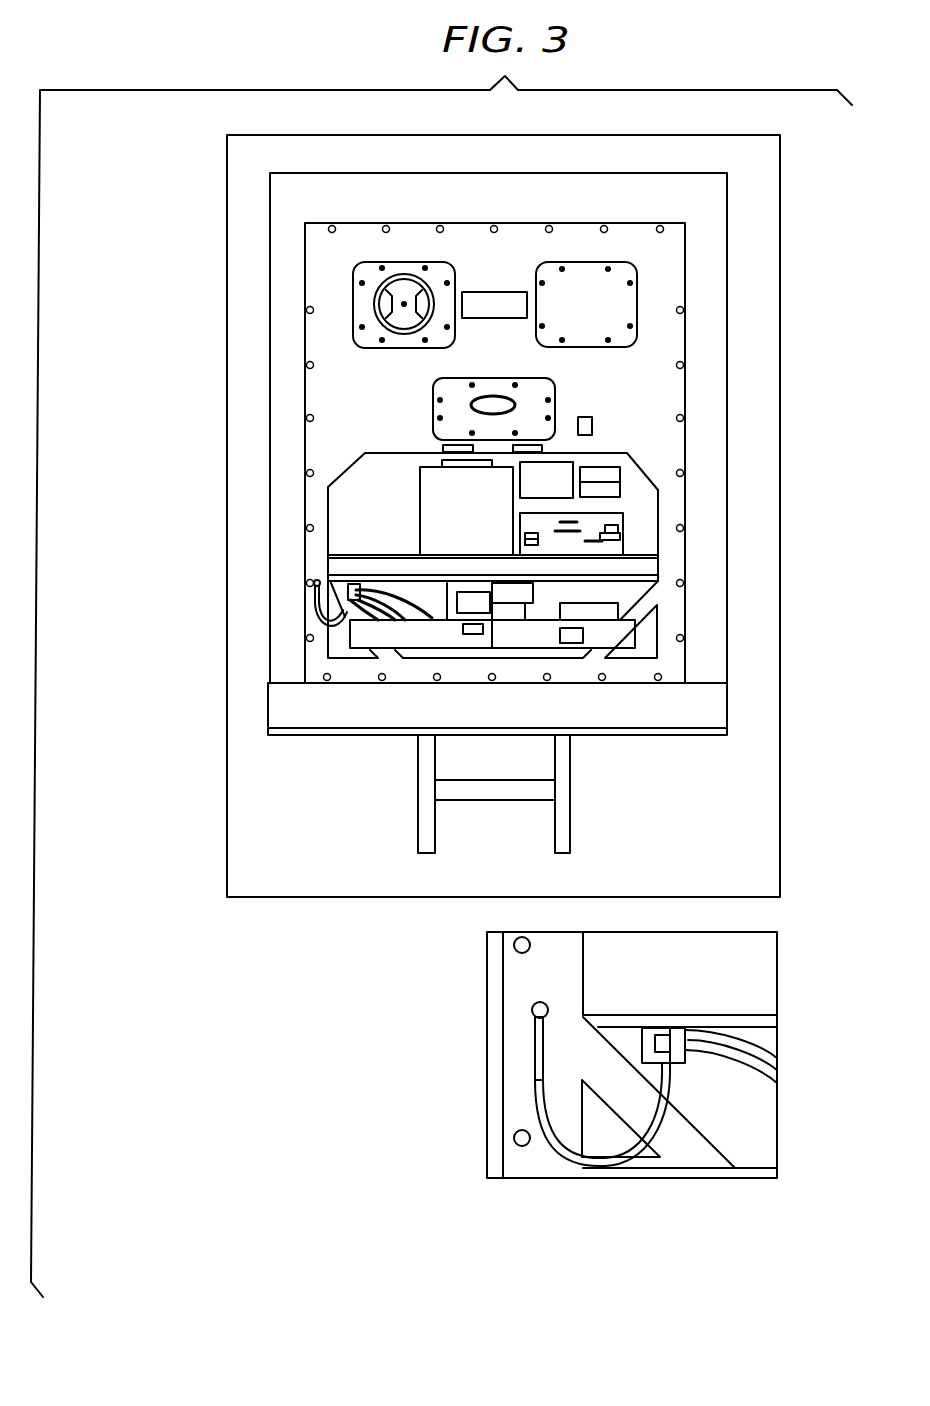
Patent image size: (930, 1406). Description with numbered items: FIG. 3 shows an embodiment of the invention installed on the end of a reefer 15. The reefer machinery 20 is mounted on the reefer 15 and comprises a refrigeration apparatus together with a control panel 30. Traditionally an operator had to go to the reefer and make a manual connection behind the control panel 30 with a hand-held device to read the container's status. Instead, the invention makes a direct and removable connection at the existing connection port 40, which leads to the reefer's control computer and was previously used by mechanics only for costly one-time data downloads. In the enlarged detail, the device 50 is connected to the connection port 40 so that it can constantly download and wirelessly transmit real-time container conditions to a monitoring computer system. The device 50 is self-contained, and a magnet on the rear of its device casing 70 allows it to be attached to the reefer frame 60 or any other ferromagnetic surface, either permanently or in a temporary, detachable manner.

The reefer 15 is at (270, 300).
The reefer machinery 20 is at (378, 477).
The control panel 30 is at (637, 482).
The connection port 40 is at (685, 1038).
The device 50 is at (530, 1055).
The reefer frame 60 is at (527, 980).
The device casing 70 is at (563, 1160).